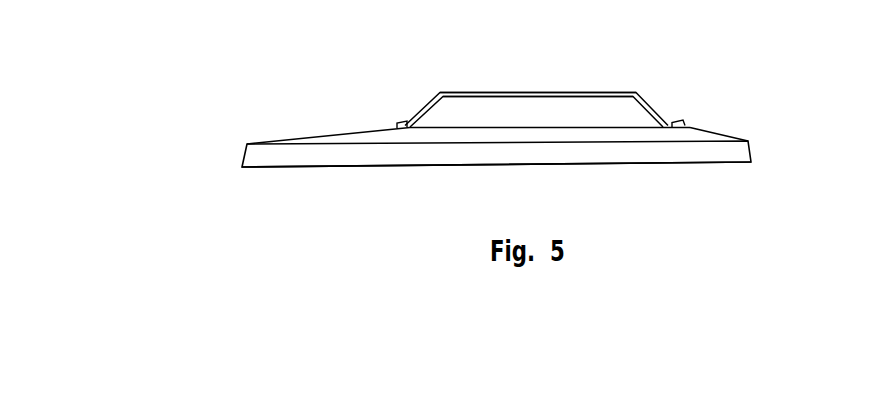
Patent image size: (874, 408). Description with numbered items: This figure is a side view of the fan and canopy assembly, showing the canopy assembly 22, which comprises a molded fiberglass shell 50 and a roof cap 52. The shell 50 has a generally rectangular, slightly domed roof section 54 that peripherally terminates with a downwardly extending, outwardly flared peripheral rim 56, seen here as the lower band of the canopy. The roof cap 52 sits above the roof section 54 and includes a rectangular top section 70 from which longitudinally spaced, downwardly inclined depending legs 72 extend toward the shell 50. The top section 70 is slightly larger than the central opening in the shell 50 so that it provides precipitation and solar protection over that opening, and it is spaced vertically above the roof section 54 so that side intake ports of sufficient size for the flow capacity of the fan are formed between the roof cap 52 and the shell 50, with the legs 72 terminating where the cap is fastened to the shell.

The canopy assembly 22 is at (247, 144).
The molded fiberglass shell 50 is at (303, 138).
The roof cap 52 is at (473, 93).
The roof section 54 is at (713, 133).
The peripheral rim 56 is at (242, 162).
The top section 70 is at (570, 93).
The depending legs 72 is at (428, 100).